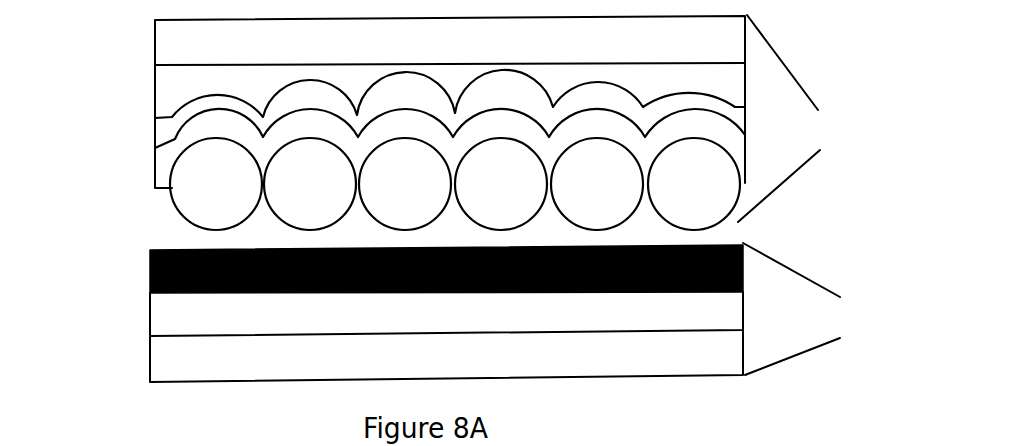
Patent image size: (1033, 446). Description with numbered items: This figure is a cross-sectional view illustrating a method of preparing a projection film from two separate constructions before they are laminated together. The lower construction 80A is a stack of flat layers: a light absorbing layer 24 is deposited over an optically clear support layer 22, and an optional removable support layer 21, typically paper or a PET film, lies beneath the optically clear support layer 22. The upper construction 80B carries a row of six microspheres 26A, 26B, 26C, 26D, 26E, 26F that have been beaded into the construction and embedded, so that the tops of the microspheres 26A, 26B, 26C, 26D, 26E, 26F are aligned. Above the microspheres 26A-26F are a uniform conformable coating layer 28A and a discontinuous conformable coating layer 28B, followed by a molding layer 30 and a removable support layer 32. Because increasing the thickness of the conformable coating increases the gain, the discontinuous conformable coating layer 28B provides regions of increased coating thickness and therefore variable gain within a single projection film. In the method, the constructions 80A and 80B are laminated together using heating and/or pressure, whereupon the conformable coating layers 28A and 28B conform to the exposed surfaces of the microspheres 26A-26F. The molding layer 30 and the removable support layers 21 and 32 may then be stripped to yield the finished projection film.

The removable support layer 21 is at (177, 363).
The optically clear support layer 22 is at (177, 318).
The light absorbing layer 24 is at (150, 272).
The microsphere 26A is at (216, 184).
The microsphere 26B is at (310, 184).
The microsphere 26C is at (405, 184).
The microsphere 26D is at (501, 184).
The microsphere 26E is at (597, 184).
The microsphere 26F is at (694, 184).
The uniform conformable coating layer 28A is at (153, 158).
The discontinuous conformable coating layer 28B is at (153, 133).
The molding layer 30 is at (187, 82).
The removable support layer 32 is at (177, 48).
The construction 80A is at (808, 309).
The construction 80B is at (802, 118).